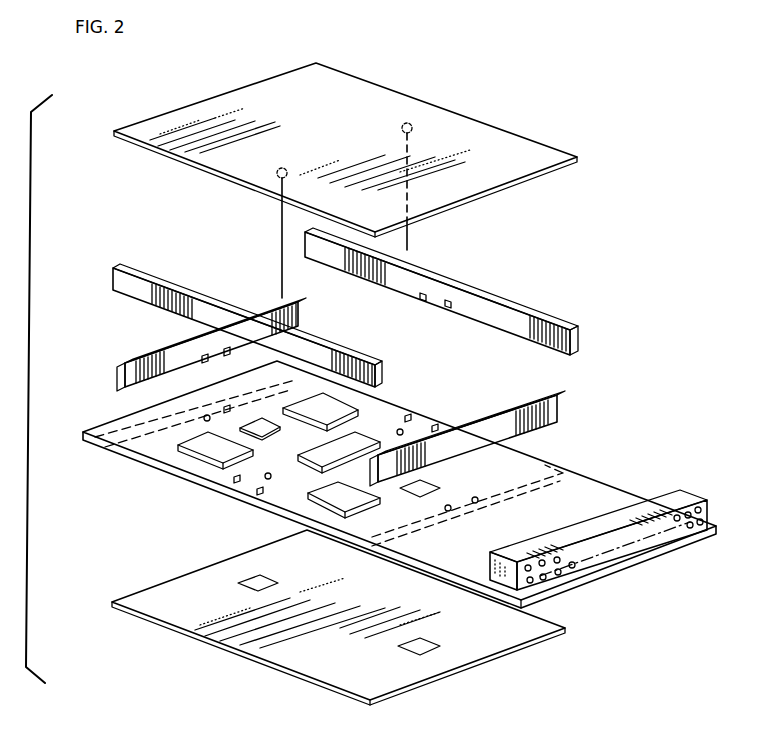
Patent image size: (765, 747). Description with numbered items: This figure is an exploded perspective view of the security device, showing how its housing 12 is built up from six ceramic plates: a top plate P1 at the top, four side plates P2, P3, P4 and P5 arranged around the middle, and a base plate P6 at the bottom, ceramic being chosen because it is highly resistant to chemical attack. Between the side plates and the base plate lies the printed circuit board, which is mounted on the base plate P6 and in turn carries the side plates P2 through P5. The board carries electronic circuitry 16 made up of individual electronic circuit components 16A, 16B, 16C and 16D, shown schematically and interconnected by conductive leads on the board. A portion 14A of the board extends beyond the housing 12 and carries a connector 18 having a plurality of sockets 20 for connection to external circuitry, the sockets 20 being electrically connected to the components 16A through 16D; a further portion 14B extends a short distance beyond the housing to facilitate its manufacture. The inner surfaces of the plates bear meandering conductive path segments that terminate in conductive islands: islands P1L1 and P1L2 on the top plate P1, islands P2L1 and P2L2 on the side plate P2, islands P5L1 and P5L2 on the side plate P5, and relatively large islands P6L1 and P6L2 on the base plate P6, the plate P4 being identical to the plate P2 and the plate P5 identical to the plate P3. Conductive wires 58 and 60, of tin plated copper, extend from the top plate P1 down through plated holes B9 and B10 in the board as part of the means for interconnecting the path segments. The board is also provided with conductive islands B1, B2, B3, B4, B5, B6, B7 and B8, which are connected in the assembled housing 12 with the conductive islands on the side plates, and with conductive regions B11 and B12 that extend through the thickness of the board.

The top plate P1 is at (497, 140).
The conductive island P1L1 is at (213, 183).
The conductive island P1L2 is at (412, 125).
The conductive wire 58 is at (257, 238).
The conductive wire 60 is at (410, 232).
The side plate P2 is at (497, 312).
The conductive island P2L1 is at (448, 308).
The conductive island P2L2 is at (420, 300).
The housing 12 is at (588, 322).
The side plate P4 is at (122, 287).
The side plate P5 is at (128, 374).
The conductive island P5L1 is at (224, 352).
The conductive island P5L2 is at (200, 360).
The side plate P3 is at (550, 413).
The electronic circuitry 16 is at (160, 444).
The printed circuit board portion 14A is at (590, 488).
The printed circuit board portion 14B is at (88, 436).
The electronic circuit component 16A is at (217, 447).
The electronic circuit component 16B is at (333, 498).
The electronic circuit component 16C is at (363, 442).
The electronic circuit component 16D is at (320, 405).
The conductive island B1 is at (452, 512).
The conductive island B2 is at (480, 502).
The conductive island B3 is at (462, 414).
The conductive island B4 is at (408, 416).
The conductive island B5 is at (225, 409).
The conductive island B6 is at (136, 416).
The conductive island B7 is at (235, 481).
The conductive island B8 is at (258, 494).
The plated through hole B9 is at (266, 479).
The plated through hole B10 is at (448, 399).
The conductive region B11 is at (279, 434).
The conductive region B12 is at (457, 481).
The connector 18 is at (690, 500).
The sockets 20 is at (575, 568).
The base plate P6 is at (262, 650).
The conductive island P6L1 is at (250, 583).
The conductive island P6L2 is at (428, 650).